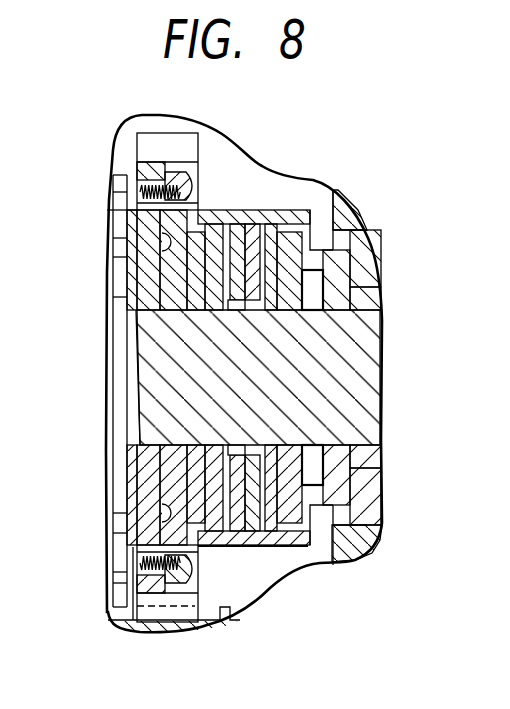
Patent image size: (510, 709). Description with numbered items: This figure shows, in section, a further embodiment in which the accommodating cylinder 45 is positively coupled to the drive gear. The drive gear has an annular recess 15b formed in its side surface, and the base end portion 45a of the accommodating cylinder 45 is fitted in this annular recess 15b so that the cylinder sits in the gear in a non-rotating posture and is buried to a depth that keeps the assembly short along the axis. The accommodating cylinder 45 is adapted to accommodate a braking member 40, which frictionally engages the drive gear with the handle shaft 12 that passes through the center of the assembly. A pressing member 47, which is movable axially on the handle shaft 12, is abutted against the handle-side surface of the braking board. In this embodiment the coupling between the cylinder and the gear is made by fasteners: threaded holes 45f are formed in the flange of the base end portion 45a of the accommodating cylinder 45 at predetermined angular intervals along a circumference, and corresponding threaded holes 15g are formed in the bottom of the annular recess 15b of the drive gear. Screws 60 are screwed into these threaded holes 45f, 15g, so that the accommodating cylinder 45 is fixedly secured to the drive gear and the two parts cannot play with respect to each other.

The handle shaft 12 is at (353, 390).
The annular recess 15b is at (133, 265).
The threaded holes 15g is at (150, 216).
The braking member 40 is at (328, 226).
The accommodating cylinder 45 is at (280, 222).
The base end portion 45a is at (200, 549).
The threaded holes 45f is at (200, 188).
The pressing member 47 is at (347, 297).
The screws 60 is at (175, 191).